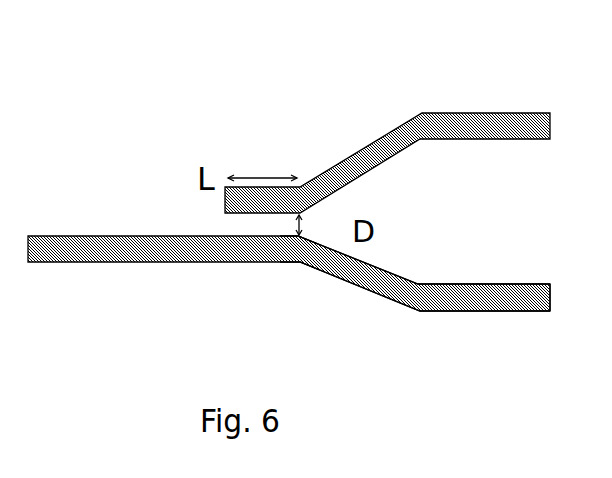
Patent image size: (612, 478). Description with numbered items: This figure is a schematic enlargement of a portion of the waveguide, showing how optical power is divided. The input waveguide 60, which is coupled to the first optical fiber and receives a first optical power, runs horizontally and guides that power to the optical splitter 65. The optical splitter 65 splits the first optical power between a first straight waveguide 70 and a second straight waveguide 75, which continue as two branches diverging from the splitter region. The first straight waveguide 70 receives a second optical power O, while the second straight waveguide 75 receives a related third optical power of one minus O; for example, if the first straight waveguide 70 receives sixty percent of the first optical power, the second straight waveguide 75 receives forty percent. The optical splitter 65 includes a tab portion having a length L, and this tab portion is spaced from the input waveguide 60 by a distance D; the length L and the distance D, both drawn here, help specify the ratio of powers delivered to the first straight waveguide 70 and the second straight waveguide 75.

The input waveguide 60 is at (108, 263).
The optical splitter 65 is at (257, 263).
The first straight waveguide 70 is at (520, 311).
The second straight waveguide 75 is at (511, 113).